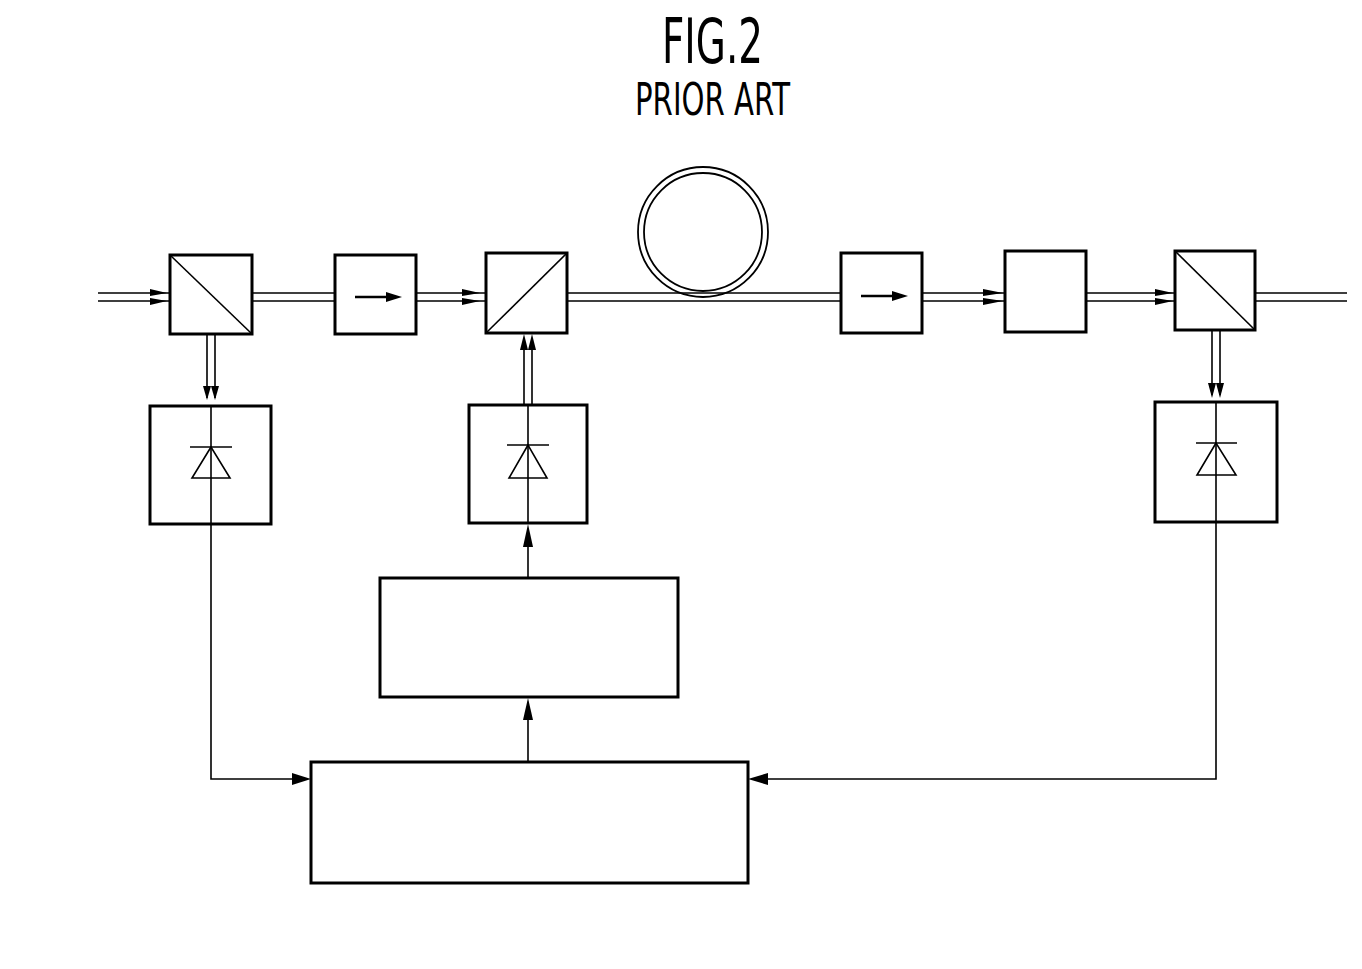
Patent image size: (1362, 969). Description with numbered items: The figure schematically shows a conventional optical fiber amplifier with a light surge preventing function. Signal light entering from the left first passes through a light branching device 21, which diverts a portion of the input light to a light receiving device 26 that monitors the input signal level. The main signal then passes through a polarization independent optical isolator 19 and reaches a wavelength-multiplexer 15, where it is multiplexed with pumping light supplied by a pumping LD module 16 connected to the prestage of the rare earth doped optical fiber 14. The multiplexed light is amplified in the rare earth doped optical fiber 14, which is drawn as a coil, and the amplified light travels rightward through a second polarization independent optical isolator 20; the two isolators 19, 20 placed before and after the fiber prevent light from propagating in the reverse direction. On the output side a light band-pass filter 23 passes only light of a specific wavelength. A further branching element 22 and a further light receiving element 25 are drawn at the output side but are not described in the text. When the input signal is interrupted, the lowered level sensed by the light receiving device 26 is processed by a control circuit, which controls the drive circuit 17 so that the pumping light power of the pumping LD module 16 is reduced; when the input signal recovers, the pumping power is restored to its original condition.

The rare earth doped optical fiber 14 is at (635, 236).
The wavelength-multiplexer 15 is at (567, 323).
The pumping LD module 16 is at (587, 507).
The drive circuit 17 is at (678, 680).
The polarization independent optical isolator 19 is at (348, 255).
The polarization independent optical isolator 20 is at (855, 253).
The light branching device 21 is at (181, 255).
The beam splitter 22 is at (1189, 251).
The light band-pass filter 23 is at (1012, 251).
The photodetector 25 is at (1277, 505).
The light receiving device 26 is at (271, 510).